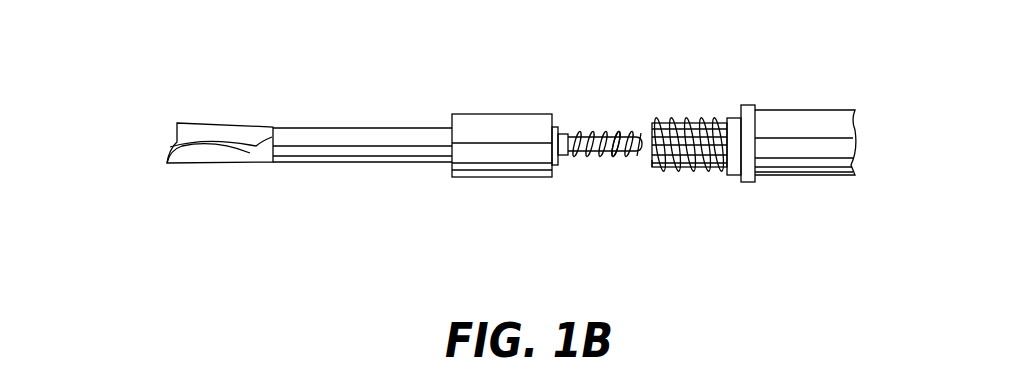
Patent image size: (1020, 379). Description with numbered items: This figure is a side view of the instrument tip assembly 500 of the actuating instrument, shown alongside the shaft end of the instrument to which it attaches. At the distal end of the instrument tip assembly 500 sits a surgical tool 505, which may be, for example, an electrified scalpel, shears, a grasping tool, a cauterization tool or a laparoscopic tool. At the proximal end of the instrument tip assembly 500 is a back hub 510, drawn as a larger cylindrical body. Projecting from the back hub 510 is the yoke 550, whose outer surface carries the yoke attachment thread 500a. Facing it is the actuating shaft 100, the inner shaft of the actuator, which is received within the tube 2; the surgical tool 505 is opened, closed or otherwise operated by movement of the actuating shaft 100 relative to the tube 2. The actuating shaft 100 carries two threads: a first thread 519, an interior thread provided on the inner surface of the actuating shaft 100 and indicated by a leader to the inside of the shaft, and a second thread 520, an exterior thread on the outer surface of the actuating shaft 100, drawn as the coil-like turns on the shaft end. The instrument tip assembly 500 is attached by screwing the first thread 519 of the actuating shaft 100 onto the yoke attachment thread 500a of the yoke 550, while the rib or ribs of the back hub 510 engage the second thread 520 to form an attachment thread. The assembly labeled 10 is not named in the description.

The instrument tip assembly 500 is at (536, 81).
The surgical tool 505 is at (257, 126).
The back hub 510 is at (472, 110).
The yoke attachment thread 500a is at (587, 133).
The yoke 550 is at (613, 133).
The coil implant assembly 10 is at (699, 137).
The second thread 520 is at (688, 118).
The actuating shaft 100 is at (652, 160).
The first thread 519 is at (710, 160).
The tube 2 is at (842, 95).